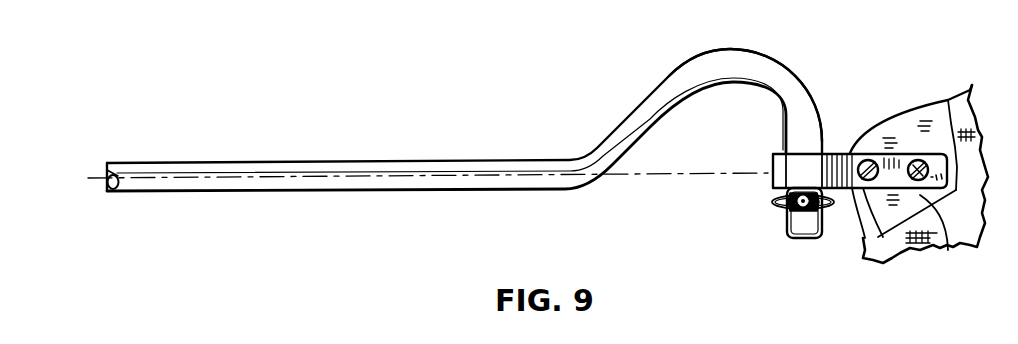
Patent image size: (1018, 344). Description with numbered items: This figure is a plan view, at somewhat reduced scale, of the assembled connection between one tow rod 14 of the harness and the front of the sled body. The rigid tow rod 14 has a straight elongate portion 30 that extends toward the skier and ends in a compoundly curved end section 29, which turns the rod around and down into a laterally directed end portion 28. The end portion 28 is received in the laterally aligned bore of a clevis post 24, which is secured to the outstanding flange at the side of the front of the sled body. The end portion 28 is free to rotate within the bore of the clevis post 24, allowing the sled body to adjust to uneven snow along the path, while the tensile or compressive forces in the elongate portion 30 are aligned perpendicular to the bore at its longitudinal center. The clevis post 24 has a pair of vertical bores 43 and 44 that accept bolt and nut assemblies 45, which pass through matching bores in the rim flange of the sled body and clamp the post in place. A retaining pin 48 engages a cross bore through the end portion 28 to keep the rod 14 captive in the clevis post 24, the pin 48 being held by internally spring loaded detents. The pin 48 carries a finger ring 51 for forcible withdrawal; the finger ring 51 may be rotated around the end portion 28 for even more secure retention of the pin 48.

The tow rod 14 is at (492, 163).
The elongate portion 30 is at (338, 160).
The compoundly curved end section 29 is at (782, 83).
The laterally directed end portion 28 is at (786, 143).
The bolt and nut assembly 45 is at (876, 160).
The clevis post 24 is at (908, 158).
The vertical bore 44 is at (881, 240).
The vertical bore 43 is at (948, 250).
The retaining pin 48 is at (776, 207).
The finger ring 51 is at (836, 213).